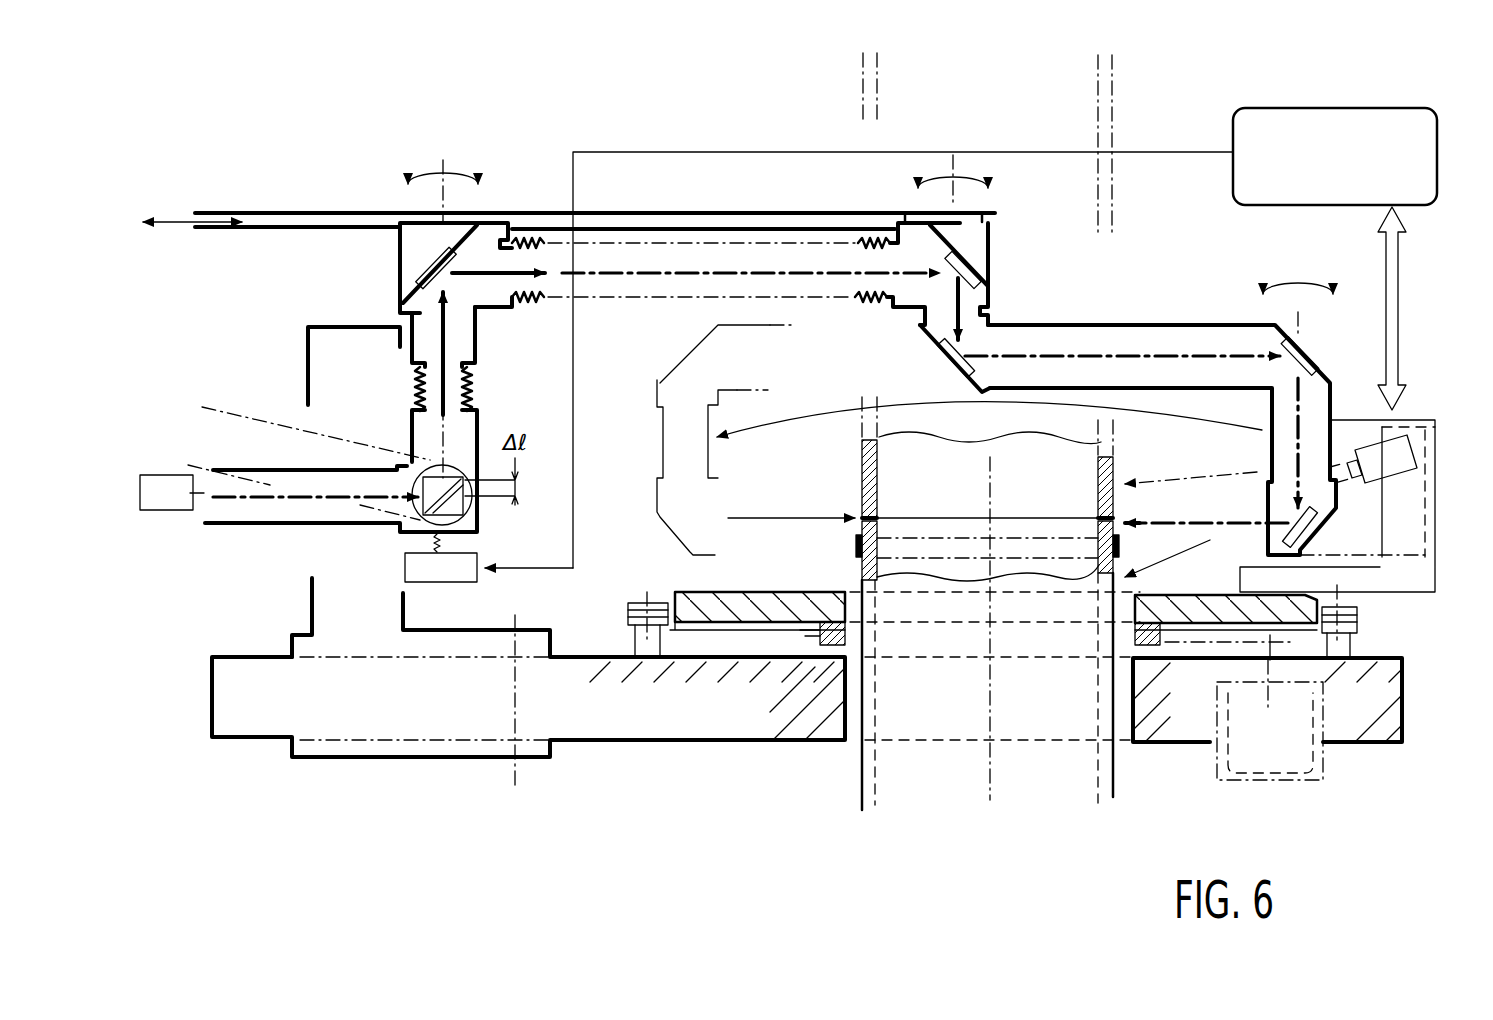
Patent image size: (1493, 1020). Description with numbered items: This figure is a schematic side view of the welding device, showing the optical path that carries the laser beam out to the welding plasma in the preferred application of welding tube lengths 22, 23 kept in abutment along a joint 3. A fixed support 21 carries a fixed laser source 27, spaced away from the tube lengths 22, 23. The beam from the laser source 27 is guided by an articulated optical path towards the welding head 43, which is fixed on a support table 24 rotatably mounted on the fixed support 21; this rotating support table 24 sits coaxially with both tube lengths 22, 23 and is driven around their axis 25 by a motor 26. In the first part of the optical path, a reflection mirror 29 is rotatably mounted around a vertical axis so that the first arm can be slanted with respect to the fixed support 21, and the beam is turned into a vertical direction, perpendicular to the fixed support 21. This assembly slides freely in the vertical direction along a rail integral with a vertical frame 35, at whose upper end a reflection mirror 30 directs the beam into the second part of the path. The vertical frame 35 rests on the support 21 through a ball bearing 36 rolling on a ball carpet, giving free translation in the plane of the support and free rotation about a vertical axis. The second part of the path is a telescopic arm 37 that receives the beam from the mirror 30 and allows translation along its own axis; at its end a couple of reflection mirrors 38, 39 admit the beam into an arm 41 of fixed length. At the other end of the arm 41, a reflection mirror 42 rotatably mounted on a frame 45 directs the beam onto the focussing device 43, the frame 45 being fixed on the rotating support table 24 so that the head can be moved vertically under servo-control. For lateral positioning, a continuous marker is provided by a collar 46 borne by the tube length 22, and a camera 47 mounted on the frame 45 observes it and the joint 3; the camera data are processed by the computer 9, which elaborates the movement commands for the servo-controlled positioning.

The joint 3 is at (913, 514).
The computer 9 is at (1425, 183).
The fixed support 21 is at (725, 697).
The tube length 22 is at (864, 760).
The tube length 23 is at (900, 447).
The support table 24 is at (800, 605).
The axis 25 is at (990, 768).
The motor 26 is at (1302, 763).
The laser source 27 is at (168, 500).
The reflection mirror 29 is at (470, 505).
The reflection mirror 30 is at (420, 256).
The vertical frame 35 is at (322, 338).
The ball bearing 36 is at (305, 632).
The telescopic arm 37 is at (535, 208).
The reflection mirror 38 is at (992, 258).
The reflection mirror 39 is at (933, 351).
The arm 41 is at (1182, 322).
The reflection mirror 42 is at (1322, 350).
The focussing device 43 is at (1316, 530).
The frame 45 is at (1437, 552).
The collar 46 is at (855, 546).
The camera 47 is at (1405, 440).